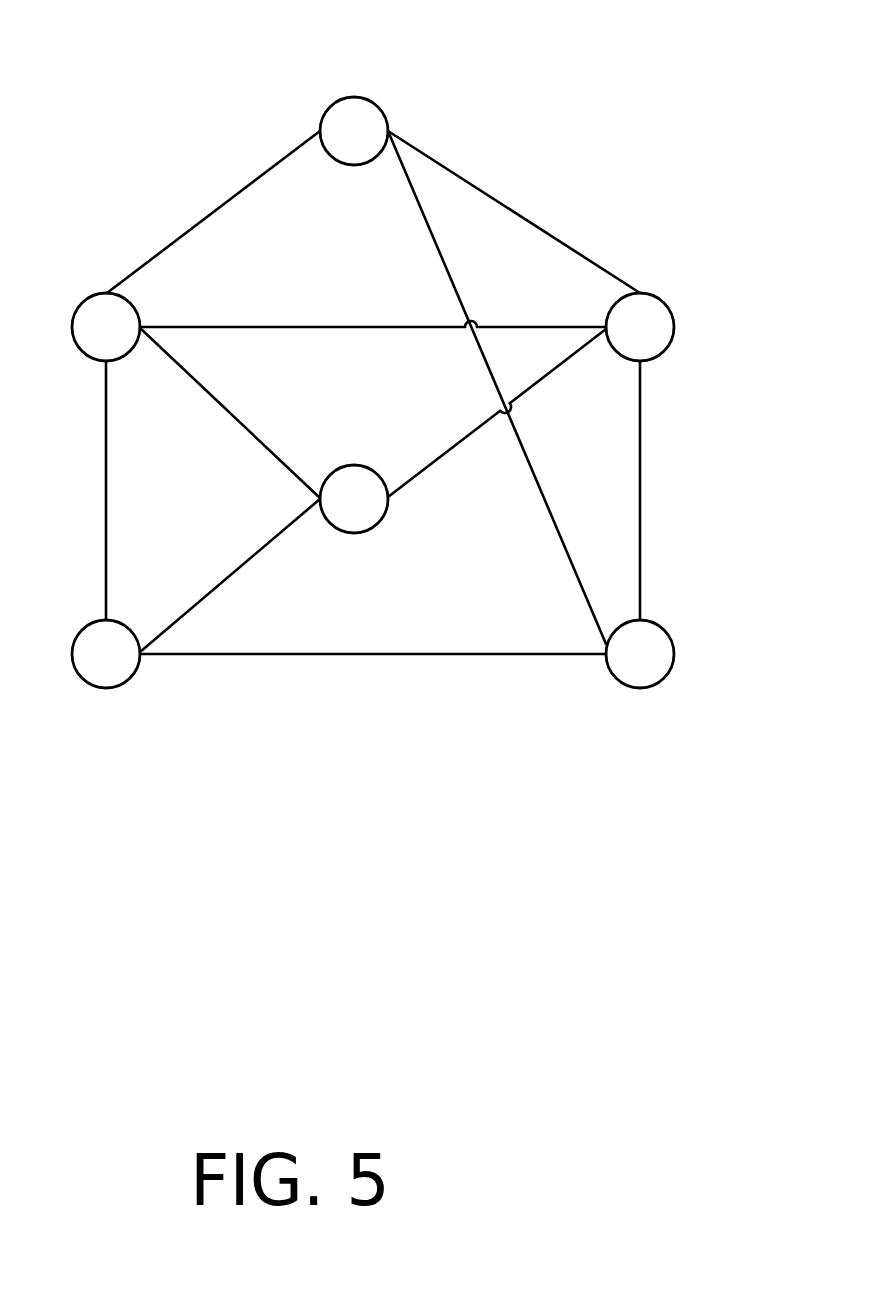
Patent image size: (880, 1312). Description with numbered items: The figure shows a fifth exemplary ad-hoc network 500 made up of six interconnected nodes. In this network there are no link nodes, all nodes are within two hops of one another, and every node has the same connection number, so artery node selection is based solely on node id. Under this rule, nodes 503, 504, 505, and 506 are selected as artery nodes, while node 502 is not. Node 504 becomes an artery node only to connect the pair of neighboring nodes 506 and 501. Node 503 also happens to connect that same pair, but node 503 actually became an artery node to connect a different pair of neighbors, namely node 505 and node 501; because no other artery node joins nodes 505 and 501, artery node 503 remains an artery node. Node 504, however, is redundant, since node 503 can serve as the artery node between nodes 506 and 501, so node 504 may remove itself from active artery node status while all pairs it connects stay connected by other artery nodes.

The fifth exemplary ad-hoc network 500 is at (582, 69).
The node 501 is at (665, 699).
The node 502 is at (390, 88).
The node 503 is at (140, 692).
The node 504 is at (675, 272).
The node 505 is at (76, 286).
The node 506 is at (388, 534).